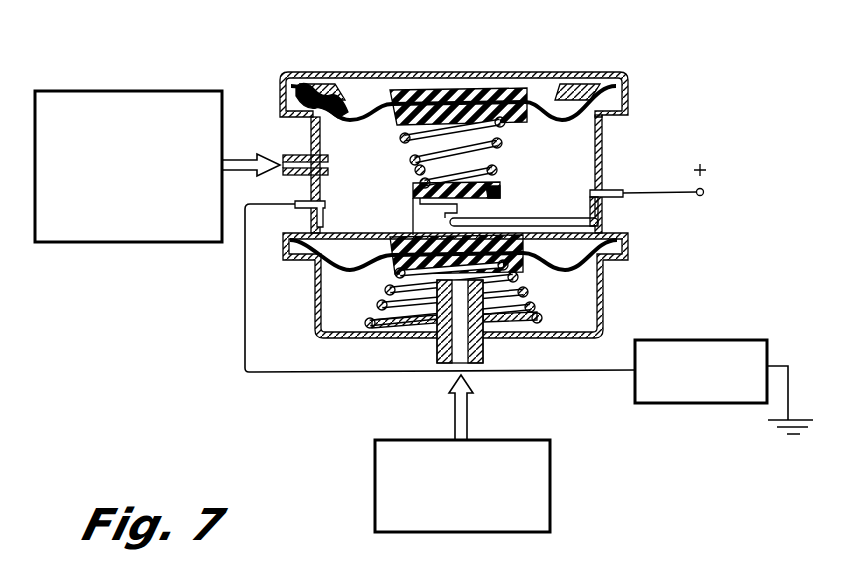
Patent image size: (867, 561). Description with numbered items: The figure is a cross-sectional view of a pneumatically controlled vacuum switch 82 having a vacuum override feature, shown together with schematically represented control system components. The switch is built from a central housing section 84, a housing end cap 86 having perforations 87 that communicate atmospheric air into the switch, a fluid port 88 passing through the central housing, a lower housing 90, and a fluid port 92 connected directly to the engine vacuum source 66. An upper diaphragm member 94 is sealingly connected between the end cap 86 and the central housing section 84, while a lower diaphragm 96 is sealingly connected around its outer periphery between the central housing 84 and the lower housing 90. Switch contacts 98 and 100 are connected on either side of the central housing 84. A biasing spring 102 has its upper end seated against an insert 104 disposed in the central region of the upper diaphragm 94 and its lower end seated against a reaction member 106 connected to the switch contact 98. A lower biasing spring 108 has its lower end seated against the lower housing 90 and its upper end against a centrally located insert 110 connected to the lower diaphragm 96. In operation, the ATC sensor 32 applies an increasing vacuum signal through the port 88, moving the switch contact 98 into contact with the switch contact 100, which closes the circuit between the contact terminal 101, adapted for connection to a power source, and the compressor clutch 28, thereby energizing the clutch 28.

The ATC sensor 32 is at (172, 91).
The fluid port 88 is at (282, 152).
The upper diaphragm member 94 is at (352, 80).
The perforations 87 is at (362, 78).
The insert 104 is at (460, 90).
The housing end cap 86 is at (586, 72).
The vacuum switch 82 is at (640, 128).
The central housing section 84 is at (603, 165).
The contact terminal 101 is at (704, 195).
The biasing spring 102 is at (503, 142).
The reaction member 106 is at (420, 168).
The switch contact 98 is at (488, 196).
The switch contact 100 is at (468, 220).
The lower diaphragm 96 is at (603, 270).
The lower housing 90 is at (314, 293).
The insert 110 is at (396, 278).
The lower biasing spring 108 is at (528, 291).
The fluid port 92 is at (470, 354).
The compressor clutch 28 is at (703, 340).
The engine vacuum source 66 is at (550, 484).